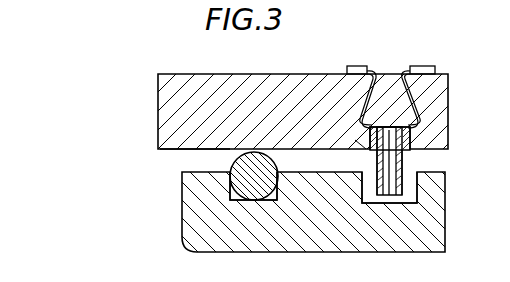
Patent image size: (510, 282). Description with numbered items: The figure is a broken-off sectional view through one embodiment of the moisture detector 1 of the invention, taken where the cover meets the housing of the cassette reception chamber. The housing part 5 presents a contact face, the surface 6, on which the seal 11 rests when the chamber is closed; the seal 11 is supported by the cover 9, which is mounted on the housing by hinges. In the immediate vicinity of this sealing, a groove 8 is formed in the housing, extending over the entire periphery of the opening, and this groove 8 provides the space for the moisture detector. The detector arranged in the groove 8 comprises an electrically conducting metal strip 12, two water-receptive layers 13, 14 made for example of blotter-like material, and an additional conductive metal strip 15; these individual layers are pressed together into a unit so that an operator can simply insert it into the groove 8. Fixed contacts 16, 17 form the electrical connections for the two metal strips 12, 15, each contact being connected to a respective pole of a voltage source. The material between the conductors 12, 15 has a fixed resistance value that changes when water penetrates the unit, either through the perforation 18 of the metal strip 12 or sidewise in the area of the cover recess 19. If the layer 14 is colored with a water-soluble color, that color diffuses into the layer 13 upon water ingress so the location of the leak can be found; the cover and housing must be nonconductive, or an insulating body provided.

The connector assembly / upper plate 1 is at (157, 96).
The housing part 5 is at (182, 148).
The surface 6 is at (262, 151).
The groove 8 is at (391, 127).
The cover 9 is at (196, 214).
The seal 11 is at (230, 182).
The metal strip 12 is at (381, 196).
The water-receptive layer 13 is at (387, 196).
The water-receptive layer 14 is at (393, 196).
The metal strip 15 is at (400, 196).
The fixed contact 16 is at (361, 148).
The fixed contact 17 is at (418, 134).
The perforation 18 is at (376, 196).
The cover recess 19 is at (412, 190).